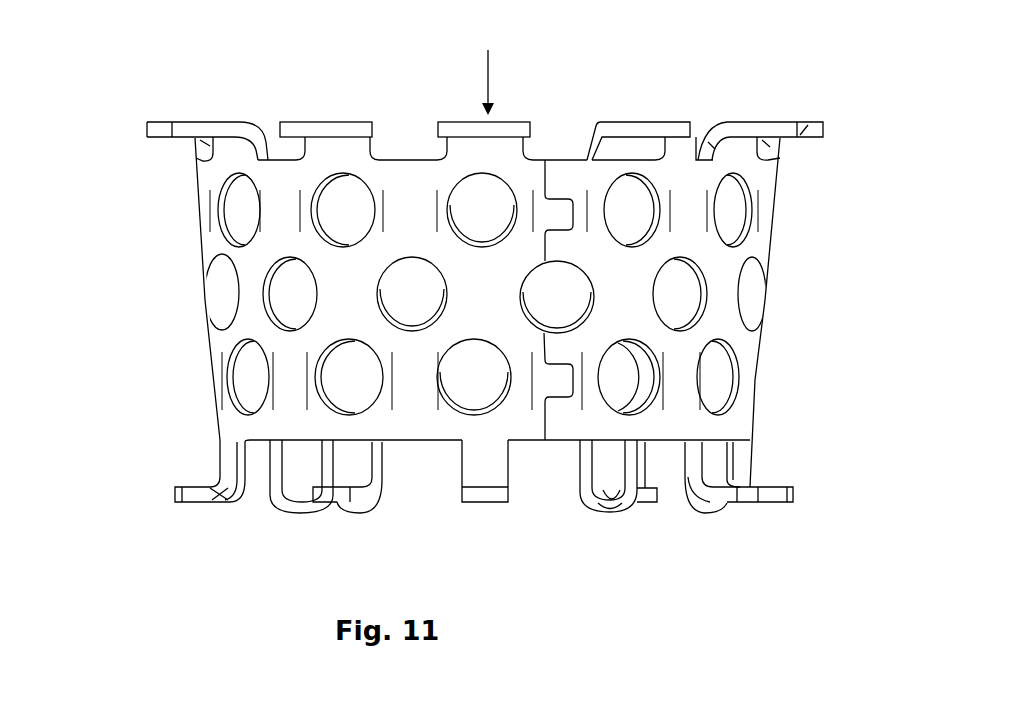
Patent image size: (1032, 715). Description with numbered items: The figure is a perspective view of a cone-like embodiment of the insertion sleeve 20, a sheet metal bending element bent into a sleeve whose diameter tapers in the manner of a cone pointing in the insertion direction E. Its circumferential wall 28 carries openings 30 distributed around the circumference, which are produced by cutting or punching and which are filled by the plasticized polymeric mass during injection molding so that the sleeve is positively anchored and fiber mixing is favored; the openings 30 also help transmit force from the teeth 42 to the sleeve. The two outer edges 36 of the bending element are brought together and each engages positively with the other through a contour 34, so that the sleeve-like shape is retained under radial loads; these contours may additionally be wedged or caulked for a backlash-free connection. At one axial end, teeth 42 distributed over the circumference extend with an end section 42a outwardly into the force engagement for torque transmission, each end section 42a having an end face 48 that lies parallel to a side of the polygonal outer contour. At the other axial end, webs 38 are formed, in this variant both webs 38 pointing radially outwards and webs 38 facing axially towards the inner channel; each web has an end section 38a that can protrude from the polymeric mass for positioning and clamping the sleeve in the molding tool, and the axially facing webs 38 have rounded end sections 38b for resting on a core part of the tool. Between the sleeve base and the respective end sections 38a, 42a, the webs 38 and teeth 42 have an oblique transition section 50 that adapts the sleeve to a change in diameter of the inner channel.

The insertion sleeve 20 is at (140, 95).
The circumferential wall 28 is at (205, 228).
The openings 30 is at (735, 205).
The contour 34 is at (559, 212).
The outer edges 36 is at (540, 442).
The webs 38 is at (228, 462).
The end section 38a is at (208, 500).
The rounded end sections 38b is at (617, 512).
The teeth 42 is at (377, 137).
The end section 42a is at (832, 122).
The end face 48 is at (522, 130).
The transition section 50 is at (706, 152).
The insertion direction E is at (486, 67).